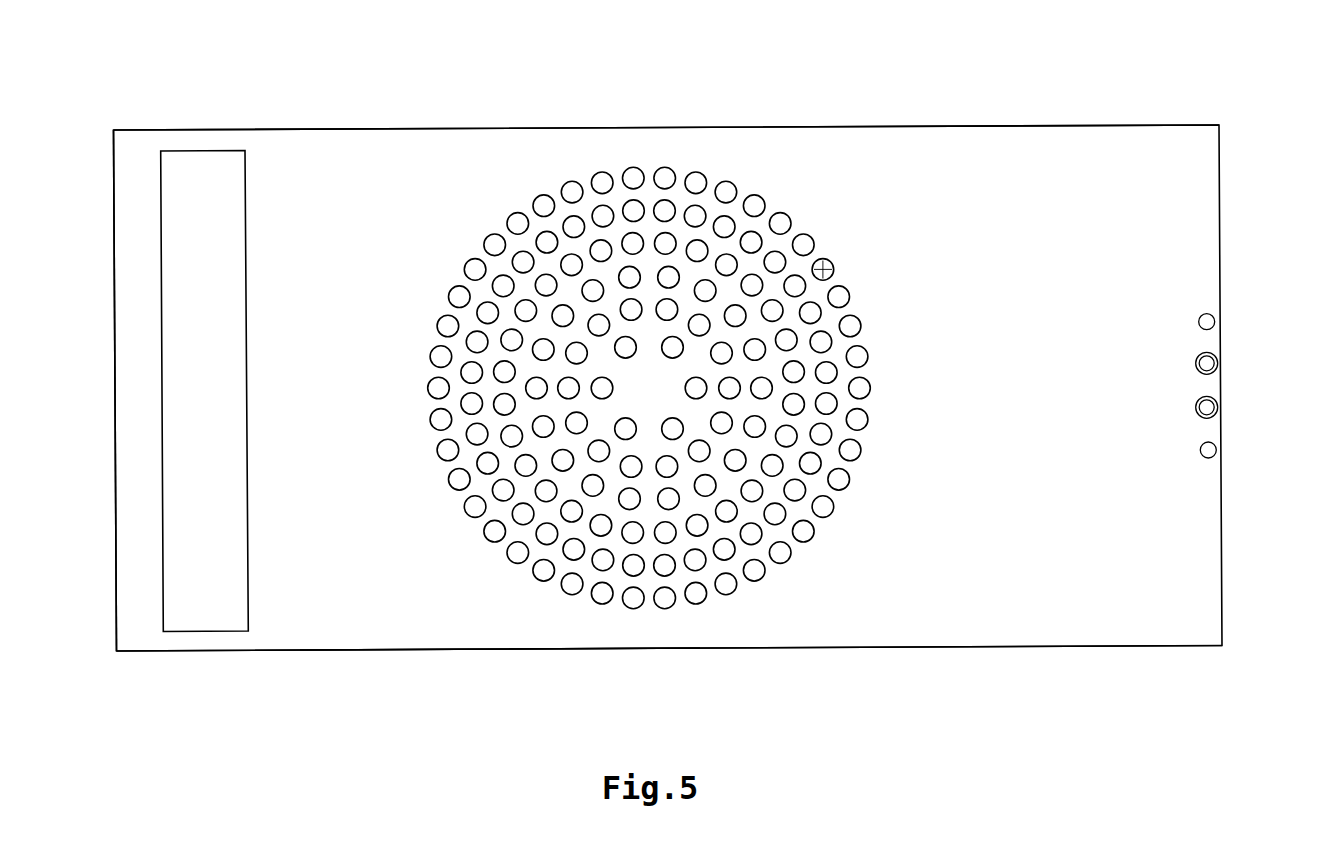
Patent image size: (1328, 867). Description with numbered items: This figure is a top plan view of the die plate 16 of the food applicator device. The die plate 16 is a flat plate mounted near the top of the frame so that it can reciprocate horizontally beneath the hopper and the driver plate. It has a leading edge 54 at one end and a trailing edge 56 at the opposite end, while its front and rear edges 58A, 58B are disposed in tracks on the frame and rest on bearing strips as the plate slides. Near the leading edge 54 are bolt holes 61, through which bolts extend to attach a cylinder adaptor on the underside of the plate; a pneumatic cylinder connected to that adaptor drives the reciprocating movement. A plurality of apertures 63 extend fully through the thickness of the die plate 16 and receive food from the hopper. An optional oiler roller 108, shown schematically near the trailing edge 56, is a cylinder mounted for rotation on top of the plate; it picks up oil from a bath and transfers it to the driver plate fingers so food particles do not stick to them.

The die plate 16 is at (508, 664).
The leading edge 54 is at (1219, 226).
The trailing edge 56 is at (114, 202).
The front edge 58A is at (809, 648).
The rear edge 58B is at (800, 126).
The bolt holes 61 is at (1215, 318).
The apertures 63 is at (527, 300).
The oiler roller 108 is at (233, 632).